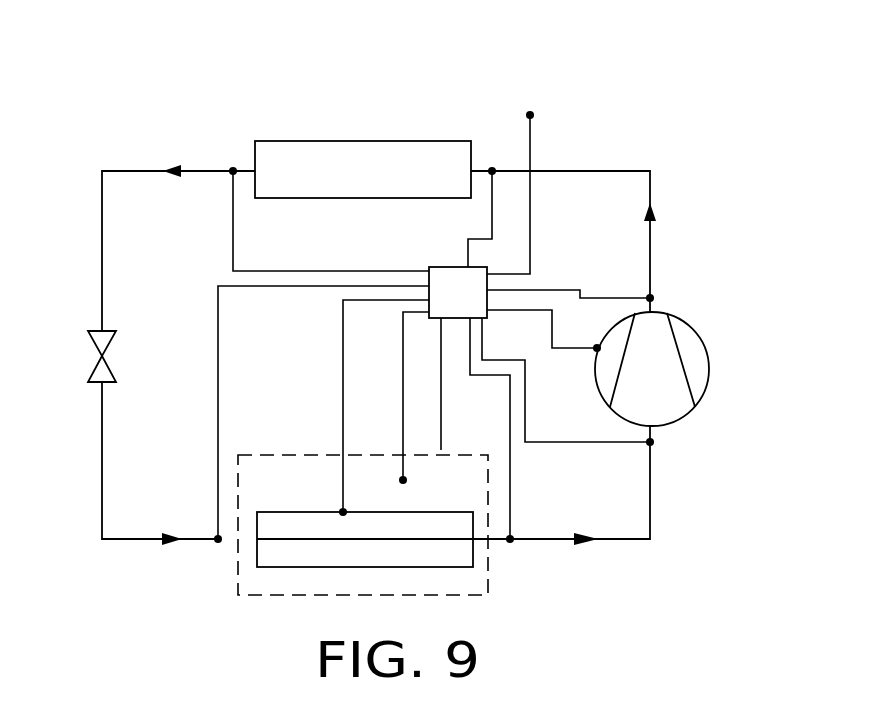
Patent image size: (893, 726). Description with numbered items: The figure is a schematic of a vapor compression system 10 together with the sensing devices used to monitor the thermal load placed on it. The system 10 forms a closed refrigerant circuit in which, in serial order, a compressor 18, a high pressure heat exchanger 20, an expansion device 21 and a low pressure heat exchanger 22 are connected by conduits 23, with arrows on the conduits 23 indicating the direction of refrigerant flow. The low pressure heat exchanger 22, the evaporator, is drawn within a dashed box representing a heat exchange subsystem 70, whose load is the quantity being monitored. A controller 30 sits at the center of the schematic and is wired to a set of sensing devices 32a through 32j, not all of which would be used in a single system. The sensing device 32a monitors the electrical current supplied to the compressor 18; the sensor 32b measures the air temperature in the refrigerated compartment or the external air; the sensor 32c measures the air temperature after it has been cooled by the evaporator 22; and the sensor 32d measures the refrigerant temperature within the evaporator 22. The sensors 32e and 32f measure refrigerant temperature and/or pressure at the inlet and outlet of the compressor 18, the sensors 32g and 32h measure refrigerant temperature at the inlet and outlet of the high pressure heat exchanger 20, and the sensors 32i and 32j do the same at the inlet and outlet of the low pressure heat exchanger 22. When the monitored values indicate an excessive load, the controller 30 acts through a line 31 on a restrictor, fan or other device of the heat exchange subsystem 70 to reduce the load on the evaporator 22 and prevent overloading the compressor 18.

The vapor compression system 10 is at (134, 74).
The compressor 18 is at (700, 338).
The high pressure heat exchanger 20 is at (348, 140).
The expansion device 21 is at (88, 342).
The low pressure heat exchanger 22 is at (278, 568).
The conduits 23 is at (101, 182).
The controller 30 is at (445, 266).
The line 31 is at (441, 383).
The sensing device 32a is at (596, 350).
The sensor 32b is at (532, 115).
The sensor 32c is at (406, 482).
The sensor 32d is at (342, 509).
The sensor 32e is at (653, 443).
The sensor 32f is at (652, 297).
The sensor 32g is at (492, 167).
The sensor 32h is at (233, 167).
The sensor 32i is at (218, 543).
The sensor 32j is at (512, 542).
The heat exchange subsystem 70 is at (488, 574).